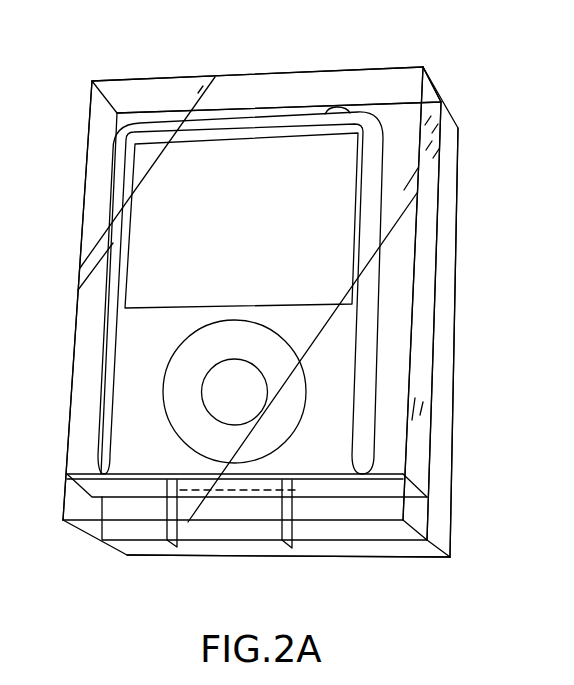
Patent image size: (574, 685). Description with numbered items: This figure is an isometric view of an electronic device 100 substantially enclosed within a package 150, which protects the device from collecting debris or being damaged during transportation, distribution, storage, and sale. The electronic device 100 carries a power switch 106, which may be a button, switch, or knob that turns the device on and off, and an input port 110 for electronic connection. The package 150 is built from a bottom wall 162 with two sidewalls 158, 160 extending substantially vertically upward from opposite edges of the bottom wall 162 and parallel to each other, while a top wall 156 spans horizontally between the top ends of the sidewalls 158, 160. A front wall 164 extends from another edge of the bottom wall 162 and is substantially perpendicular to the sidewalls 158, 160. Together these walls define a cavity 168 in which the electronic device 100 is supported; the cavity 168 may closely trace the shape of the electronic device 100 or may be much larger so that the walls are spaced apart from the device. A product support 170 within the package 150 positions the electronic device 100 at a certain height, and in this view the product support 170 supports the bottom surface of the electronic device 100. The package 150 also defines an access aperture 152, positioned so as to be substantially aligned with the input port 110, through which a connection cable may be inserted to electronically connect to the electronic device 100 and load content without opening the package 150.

The electronic device 100 is at (347, 328).
The power switch 106 is at (336, 108).
The input port 110 is at (253, 490).
The package 150 is at (455, 347).
The access aperture 152 is at (203, 540).
The top wall 156 is at (292, 78).
The sidewall 158 is at (89, 172).
The sidewall 160 is at (453, 222).
The bottom wall 162 is at (132, 555).
The front wall 164 is at (413, 157).
The cavity 168 is at (402, 92).
The product support 170 is at (397, 490).